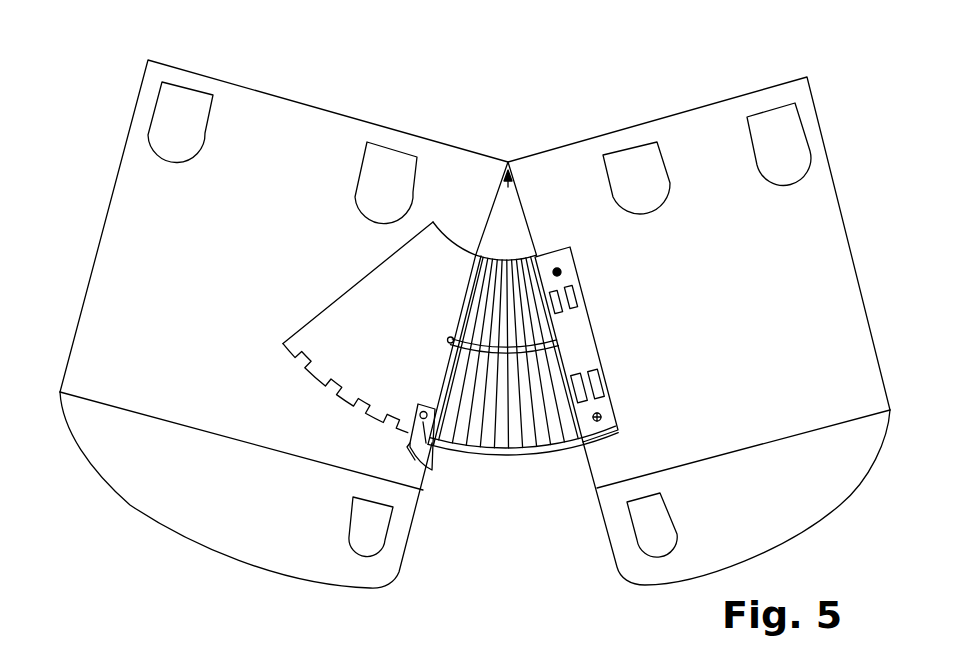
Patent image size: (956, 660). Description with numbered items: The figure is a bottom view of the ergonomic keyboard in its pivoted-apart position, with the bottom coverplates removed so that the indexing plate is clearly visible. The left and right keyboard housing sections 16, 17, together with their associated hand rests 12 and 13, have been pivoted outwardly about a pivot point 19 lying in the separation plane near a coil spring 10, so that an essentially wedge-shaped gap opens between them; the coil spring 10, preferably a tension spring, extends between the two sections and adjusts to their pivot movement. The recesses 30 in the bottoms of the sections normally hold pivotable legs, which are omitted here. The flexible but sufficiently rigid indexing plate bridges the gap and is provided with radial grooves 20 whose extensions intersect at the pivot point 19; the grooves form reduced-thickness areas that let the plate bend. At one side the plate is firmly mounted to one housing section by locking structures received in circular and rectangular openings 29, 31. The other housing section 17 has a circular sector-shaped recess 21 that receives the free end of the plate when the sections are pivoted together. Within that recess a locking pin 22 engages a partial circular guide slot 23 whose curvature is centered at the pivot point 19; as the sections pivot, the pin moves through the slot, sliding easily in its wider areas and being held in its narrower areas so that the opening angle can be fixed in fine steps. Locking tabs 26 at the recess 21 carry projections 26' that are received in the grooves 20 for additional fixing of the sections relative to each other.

The coil spring 10 is at (515, 180).
The hand rest 12 is at (743, 492).
The hand rest 13 is at (122, 460).
The keyboard housing section 16 is at (753, 230).
The keyboard housing section 17 is at (100, 306).
The pivot point 19 is at (507, 160).
The radial grooves 20 is at (437, 374).
The circular sector-shaped recess 21 is at (333, 326).
The locking pin 22 is at (447, 339).
The partial circular guide slot 23 is at (552, 338).
The locking tabs 26 is at (455, 458).
The projections 26' is at (382, 448).
The circular opening 29 is at (557, 268).
The recesses 30 is at (195, 118).
The rectangular opening 31 is at (600, 391).